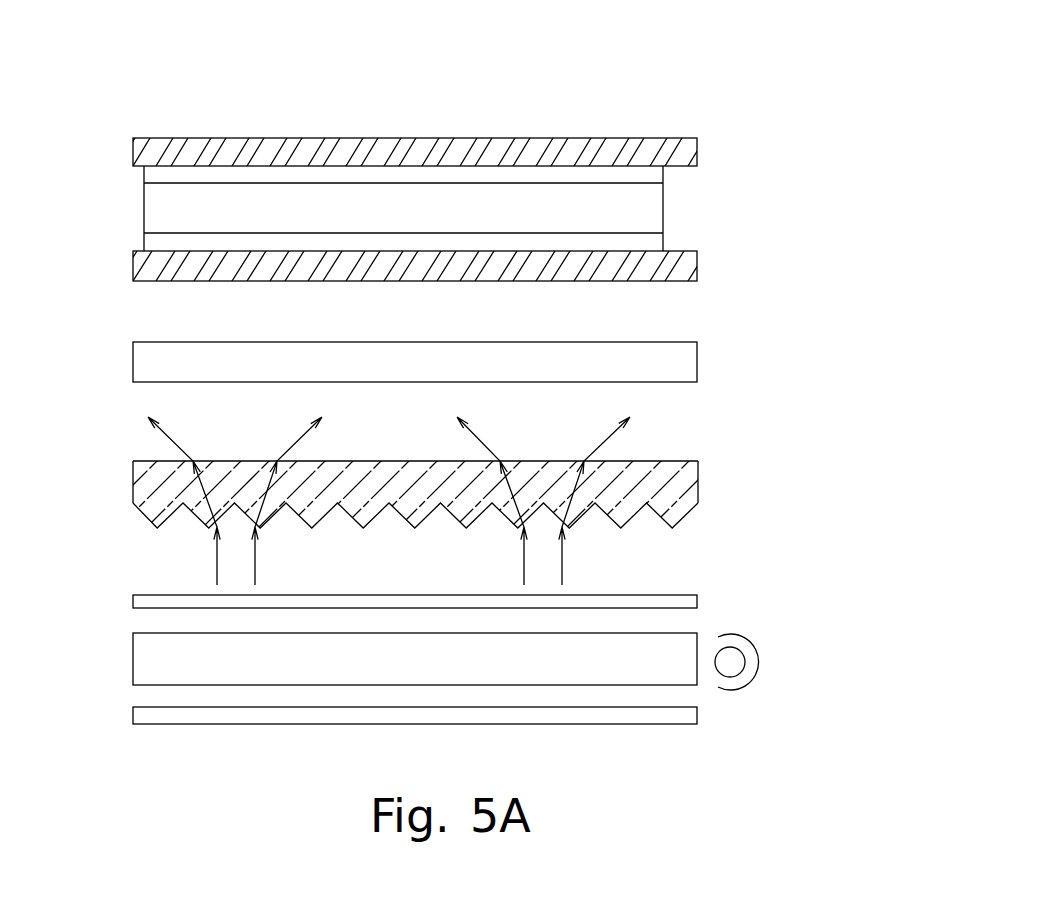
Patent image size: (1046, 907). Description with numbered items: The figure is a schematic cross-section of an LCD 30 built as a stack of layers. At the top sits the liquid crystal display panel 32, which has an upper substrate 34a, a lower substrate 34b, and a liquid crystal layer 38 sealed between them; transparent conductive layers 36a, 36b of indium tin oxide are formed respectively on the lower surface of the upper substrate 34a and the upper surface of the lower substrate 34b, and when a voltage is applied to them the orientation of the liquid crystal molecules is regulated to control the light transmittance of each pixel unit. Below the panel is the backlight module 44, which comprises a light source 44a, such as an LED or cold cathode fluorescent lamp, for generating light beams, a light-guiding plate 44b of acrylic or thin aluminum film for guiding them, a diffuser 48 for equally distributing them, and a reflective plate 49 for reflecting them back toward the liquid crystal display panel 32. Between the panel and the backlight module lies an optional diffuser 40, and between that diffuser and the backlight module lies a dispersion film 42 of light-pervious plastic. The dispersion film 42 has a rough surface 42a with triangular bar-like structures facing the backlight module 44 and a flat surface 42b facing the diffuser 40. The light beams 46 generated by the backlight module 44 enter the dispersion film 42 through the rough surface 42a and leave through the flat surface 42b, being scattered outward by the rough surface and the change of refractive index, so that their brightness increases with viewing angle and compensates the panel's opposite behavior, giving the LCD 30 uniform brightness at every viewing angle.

The LCD 30 is at (682, 55).
The liquid crystal display panel 32 is at (760, 138).
The upper substrate 34a is at (158, 150).
The lower substrate 34b is at (158, 262).
The transparent conductive layer 36a is at (645, 177).
The transparent conductive layer 36b is at (645, 240).
The liquid crystal layer 38 is at (160, 205).
The diffuser 40 is at (680, 367).
The dispersion film 42 is at (680, 487).
The rough surface 42a is at (706, 541).
The flat surface 42b is at (690, 447).
The backlight module 44 is at (730, 726).
The light source 44a is at (733, 662).
The light-guiding plate 44b is at (675, 657).
The light beams 46 is at (217, 566).
The diffuser 48 is at (160, 602).
The reflective plate 49 is at (160, 716).